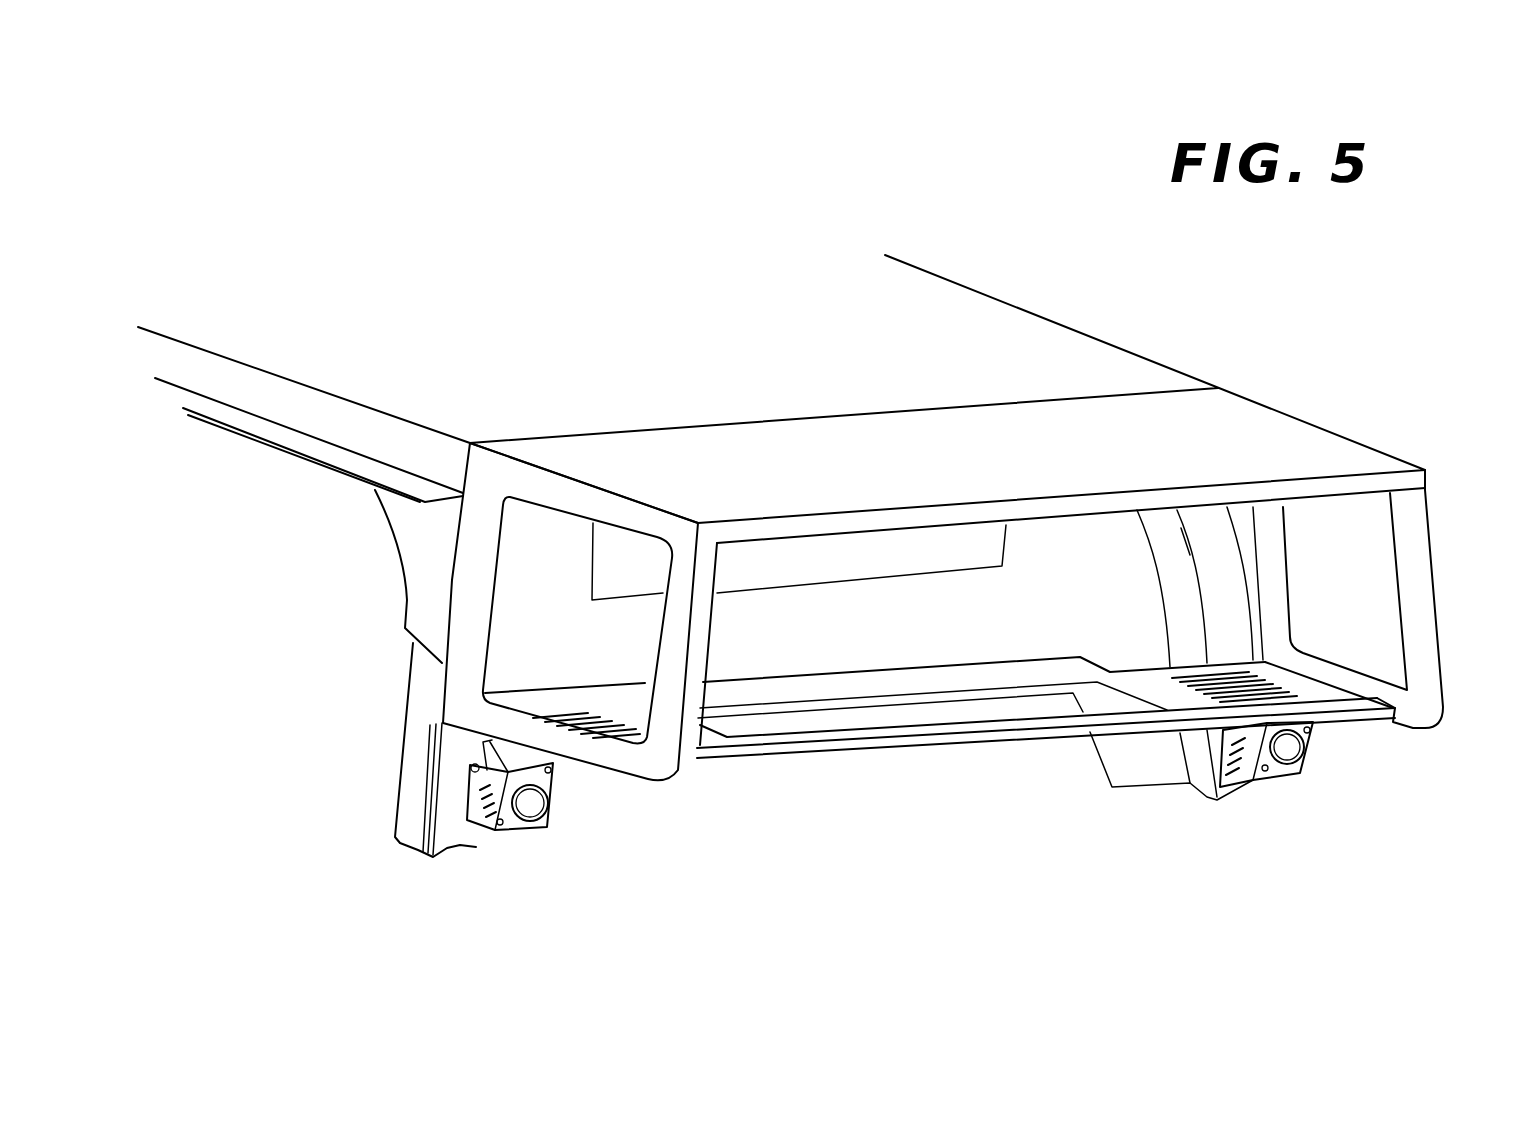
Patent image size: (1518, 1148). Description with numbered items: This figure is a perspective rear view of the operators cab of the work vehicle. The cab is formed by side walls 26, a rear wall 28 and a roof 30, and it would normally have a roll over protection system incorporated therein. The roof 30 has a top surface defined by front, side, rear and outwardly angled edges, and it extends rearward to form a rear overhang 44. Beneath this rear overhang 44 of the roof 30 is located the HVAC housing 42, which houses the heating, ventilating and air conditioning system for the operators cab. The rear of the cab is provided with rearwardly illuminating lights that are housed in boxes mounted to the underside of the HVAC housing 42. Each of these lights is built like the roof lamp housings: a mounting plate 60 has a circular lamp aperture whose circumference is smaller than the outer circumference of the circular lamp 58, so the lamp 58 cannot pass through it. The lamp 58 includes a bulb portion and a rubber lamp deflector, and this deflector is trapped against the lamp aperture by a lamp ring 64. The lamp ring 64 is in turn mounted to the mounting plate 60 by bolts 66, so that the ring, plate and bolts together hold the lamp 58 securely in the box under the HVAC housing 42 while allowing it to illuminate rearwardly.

The side walls 26 is at (321, 581).
The rear wall 28 is at (885, 833).
The roof 30 is at (773, 366).
The HVAC housing 42 is at (1392, 598).
The rear overhang 44 is at (1258, 422).
The lamp 58 is at (537, 800).
The mounting plate 60 is at (542, 827).
The lamp ring 64 is at (512, 825).
The bolts 66 is at (553, 780).